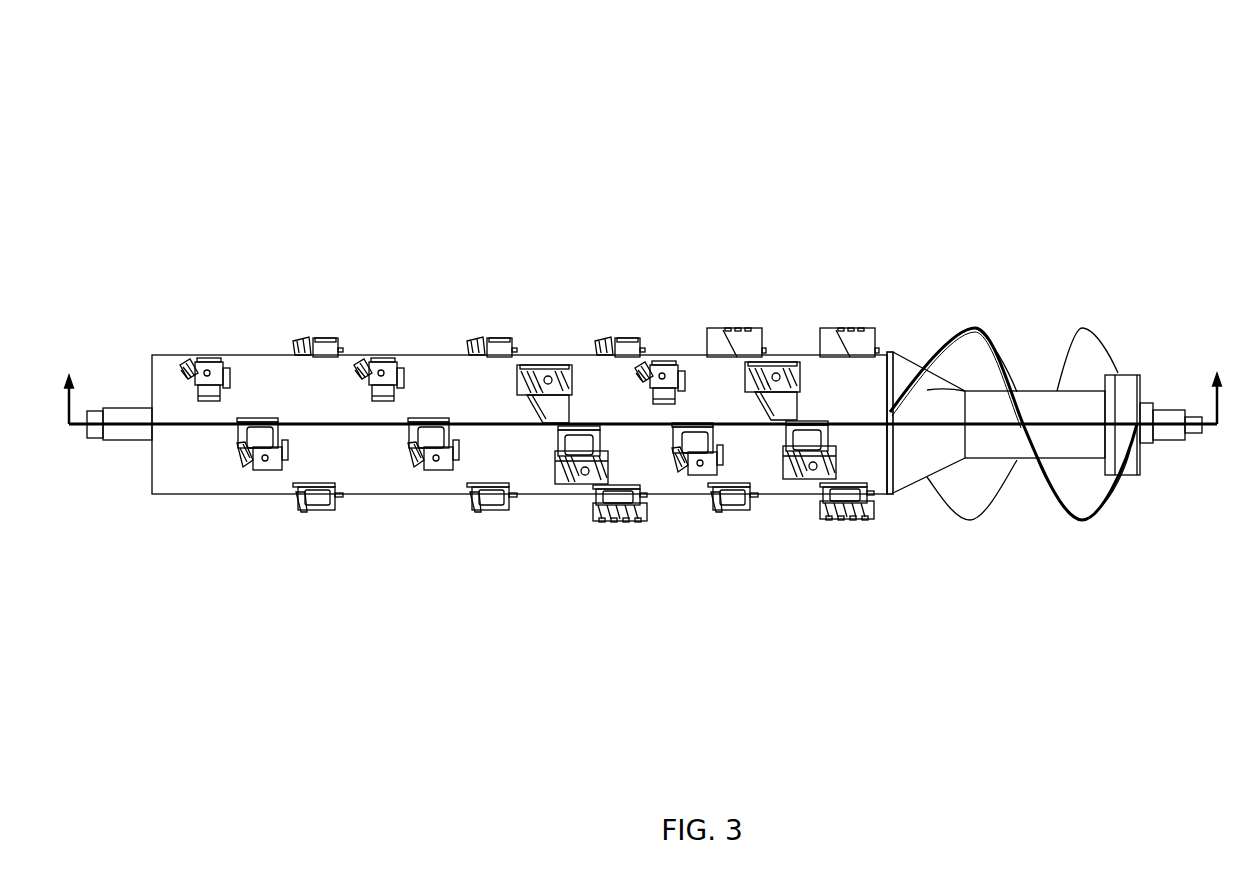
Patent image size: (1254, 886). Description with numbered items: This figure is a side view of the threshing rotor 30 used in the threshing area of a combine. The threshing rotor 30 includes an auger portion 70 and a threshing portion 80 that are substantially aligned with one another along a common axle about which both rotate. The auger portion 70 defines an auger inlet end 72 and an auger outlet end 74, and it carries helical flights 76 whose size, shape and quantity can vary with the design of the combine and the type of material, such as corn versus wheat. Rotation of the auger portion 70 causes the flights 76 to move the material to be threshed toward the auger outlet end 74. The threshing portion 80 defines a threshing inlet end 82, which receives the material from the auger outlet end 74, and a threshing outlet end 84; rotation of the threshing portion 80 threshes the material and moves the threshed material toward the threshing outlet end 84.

The threshing rotor 30 is at (1102, 93).
The auger portion 70 is at (892, 257).
The auger inlet end 72 is at (1126, 506).
The auger outlet end 74 is at (925, 534).
The flights 76 is at (968, 492).
The threshing portion 80 is at (892, 257).
The threshing inlet end 82 is at (875, 535).
The threshing outlet end 84 is at (180, 520).